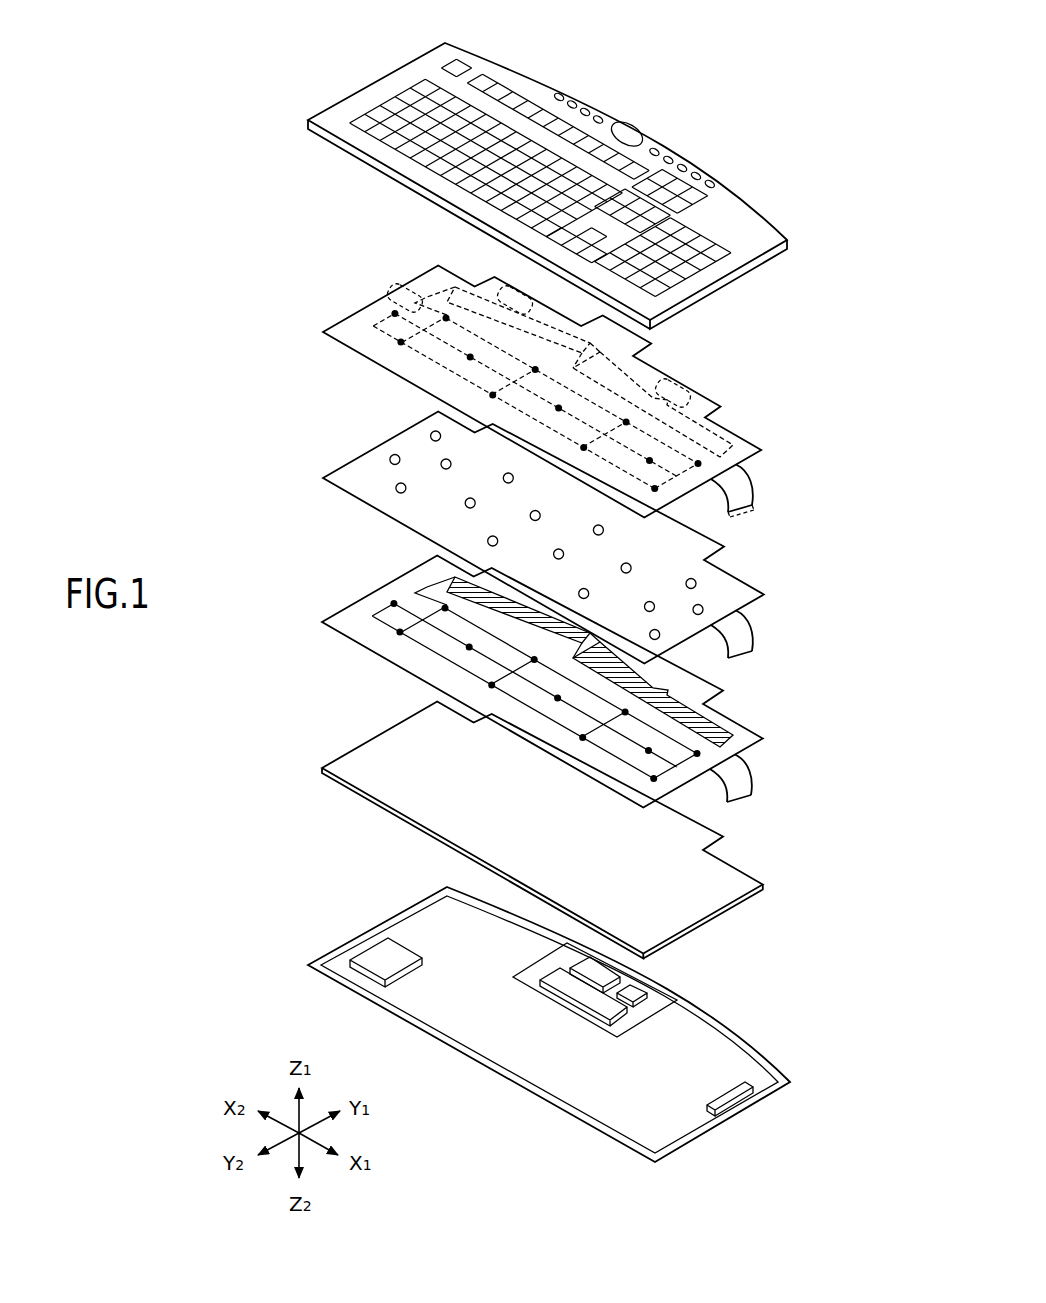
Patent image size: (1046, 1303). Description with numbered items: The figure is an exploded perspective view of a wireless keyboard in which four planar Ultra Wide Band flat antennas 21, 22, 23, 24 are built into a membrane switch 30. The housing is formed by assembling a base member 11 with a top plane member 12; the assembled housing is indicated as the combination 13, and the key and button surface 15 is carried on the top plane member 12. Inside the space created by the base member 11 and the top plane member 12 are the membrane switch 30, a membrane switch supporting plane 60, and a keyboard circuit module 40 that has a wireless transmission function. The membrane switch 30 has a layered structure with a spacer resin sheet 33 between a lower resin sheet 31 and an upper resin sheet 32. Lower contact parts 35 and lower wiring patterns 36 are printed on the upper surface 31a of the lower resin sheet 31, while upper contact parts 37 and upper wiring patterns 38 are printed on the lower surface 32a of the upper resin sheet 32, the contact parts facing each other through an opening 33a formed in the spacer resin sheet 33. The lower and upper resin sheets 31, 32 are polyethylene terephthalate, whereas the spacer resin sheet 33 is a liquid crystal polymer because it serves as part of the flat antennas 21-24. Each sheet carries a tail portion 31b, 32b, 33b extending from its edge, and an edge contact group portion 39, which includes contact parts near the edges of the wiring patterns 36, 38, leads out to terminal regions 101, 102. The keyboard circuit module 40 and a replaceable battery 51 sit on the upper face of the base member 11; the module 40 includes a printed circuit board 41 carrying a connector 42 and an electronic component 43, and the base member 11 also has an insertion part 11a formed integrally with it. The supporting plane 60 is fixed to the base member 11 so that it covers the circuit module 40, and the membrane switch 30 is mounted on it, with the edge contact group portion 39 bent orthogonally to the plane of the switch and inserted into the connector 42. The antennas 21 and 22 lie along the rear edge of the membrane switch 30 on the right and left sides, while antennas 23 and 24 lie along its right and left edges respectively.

The base member 11 is at (792, 1084).
The insertion part 11a is at (746, 1112).
The top plane member 12 is at (768, 216).
The keyboard housing 13 is at (717, 157).
The operation buttons 15 is at (560, 97).
The UWB flat antenna 21 is at (699, 384).
The UWB flat antenna 22 is at (515, 281).
The UWB flat antenna 23 is at (766, 509).
The UWB flat antenna 24 is at (392, 283).
The membrane switch 30 is at (237, 292).
The lower resin sheet 31 is at (318, 599).
The upper surface of the lower resin sheet 31a is at (648, 796).
The lower sheet tail 31b is at (752, 766).
The upper resin sheet 32 is at (318, 313).
The lower surface of the upper resin sheet 32a is at (650, 510).
The upper sheet tail 32b is at (750, 473).
The spacer resin sheet 33 is at (318, 455).
The opening 33a is at (398, 493).
The spacer sheet tail 33b is at (752, 621).
The lower contact part 35 is at (490, 686).
The lower wiring pattern 36 is at (433, 656).
The upper contact part 37 is at (490, 397).
The upper wiring pattern 38 is at (483, 378).
The edge contact group portion 39 is at (656, 344).
The keyboard circuit module 40 is at (665, 985).
The printed circuit board 41 is at (641, 1013).
The connector 42 is at (604, 975).
The electronic component 43 is at (556, 976).
The battery 51 is at (383, 949).
The membrane switch supporting plane 60 is at (714, 870).
The lower connection terminal 101 is at (708, 718).
The upper connection terminal 102 is at (724, 422).